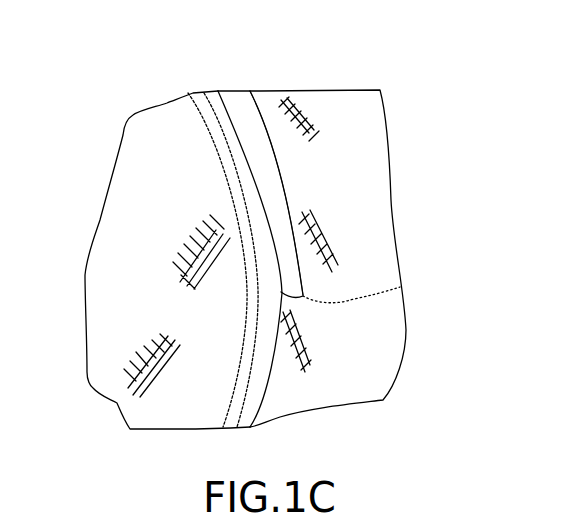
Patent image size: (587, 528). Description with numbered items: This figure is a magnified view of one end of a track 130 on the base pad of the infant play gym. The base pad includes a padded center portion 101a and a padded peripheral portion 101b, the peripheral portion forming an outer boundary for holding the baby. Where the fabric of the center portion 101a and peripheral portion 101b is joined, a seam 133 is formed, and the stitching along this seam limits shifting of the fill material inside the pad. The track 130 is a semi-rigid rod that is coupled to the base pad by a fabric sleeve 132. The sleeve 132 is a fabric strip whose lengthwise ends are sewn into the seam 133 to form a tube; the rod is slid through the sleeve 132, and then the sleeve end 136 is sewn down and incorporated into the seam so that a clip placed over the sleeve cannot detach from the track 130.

The padded center portion 101a is at (127, 333).
The padded peripheral portion 101b is at (347, 98).
The track 130 is at (300, 172).
The fabric sleeve 132 is at (284, 238).
The seam 133 is at (236, 180).
The end of sleeve 136 is at (304, 299).